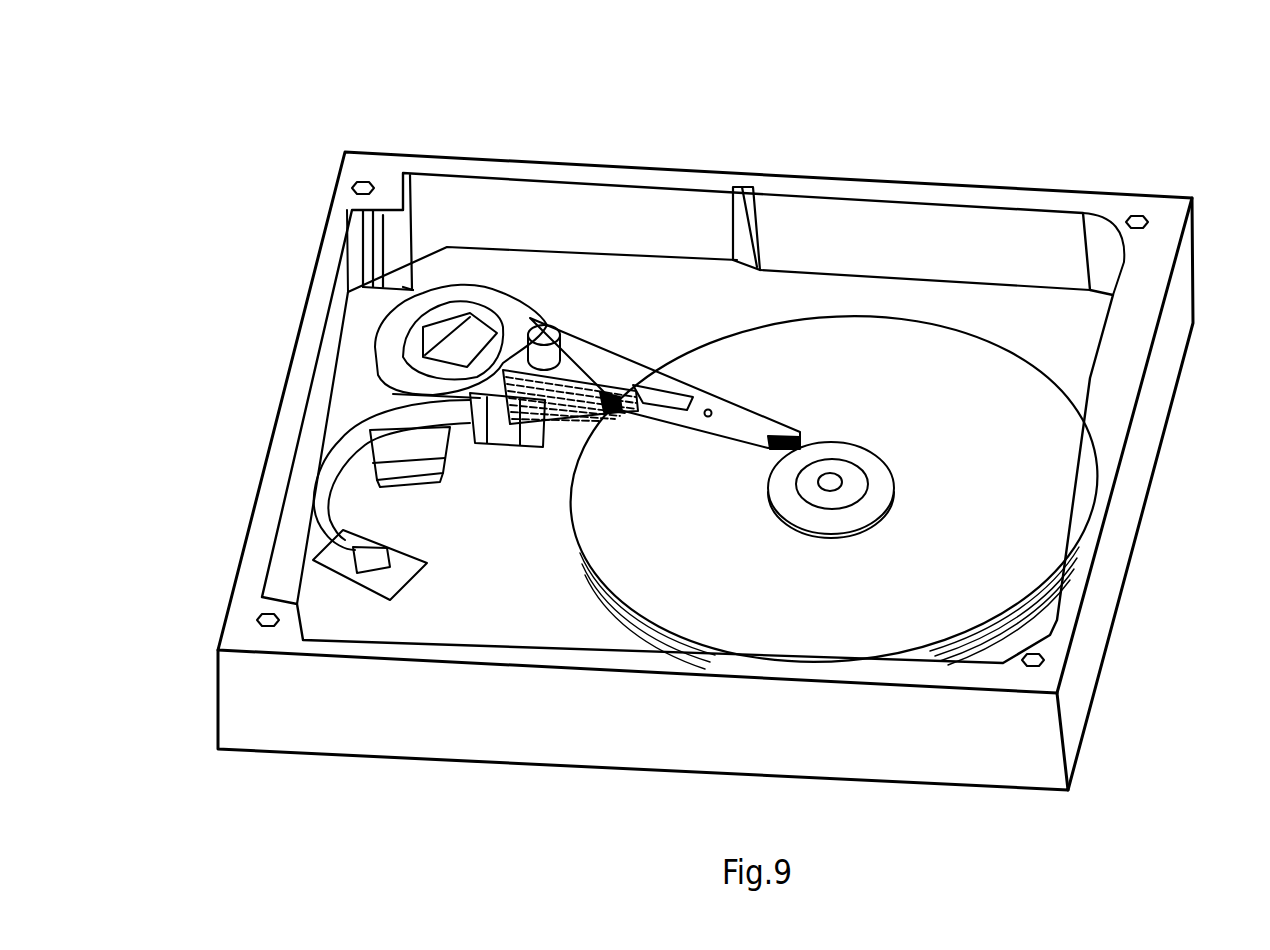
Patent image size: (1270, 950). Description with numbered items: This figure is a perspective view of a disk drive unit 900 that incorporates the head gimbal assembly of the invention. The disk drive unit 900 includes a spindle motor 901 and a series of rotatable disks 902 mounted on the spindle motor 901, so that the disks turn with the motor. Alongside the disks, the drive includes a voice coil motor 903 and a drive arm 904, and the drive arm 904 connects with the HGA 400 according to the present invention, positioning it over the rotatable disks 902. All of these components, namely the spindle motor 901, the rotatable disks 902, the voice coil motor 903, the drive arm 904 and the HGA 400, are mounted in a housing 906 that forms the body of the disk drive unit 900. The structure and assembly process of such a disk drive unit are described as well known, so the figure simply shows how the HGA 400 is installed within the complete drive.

The disk drive unit 900 is at (715, 409).
The housing 906 is at (1088, 625).
The rotatable disks 902 is at (1030, 435).
The spindle motor 901 is at (895, 490).
The voice coil motor 903 is at (478, 287).
The drive arm 904 is at (585, 367).
The HGA 400 is at (712, 412).